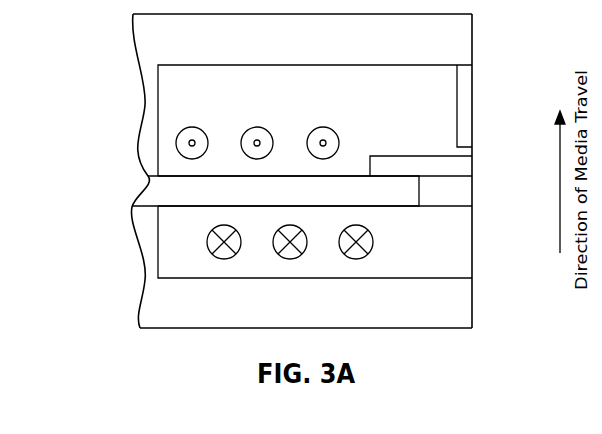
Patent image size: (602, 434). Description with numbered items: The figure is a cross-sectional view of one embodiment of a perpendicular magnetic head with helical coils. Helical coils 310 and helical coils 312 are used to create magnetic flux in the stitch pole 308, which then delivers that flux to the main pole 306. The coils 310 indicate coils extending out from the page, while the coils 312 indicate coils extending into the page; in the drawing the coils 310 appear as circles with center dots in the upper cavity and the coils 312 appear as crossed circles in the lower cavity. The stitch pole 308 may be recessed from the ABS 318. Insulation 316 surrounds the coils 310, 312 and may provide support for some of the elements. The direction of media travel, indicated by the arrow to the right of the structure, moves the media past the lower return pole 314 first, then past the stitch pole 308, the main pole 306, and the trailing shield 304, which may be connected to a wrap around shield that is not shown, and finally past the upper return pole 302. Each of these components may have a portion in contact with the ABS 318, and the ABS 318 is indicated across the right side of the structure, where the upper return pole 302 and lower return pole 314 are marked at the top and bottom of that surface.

The upper return pole 302 is at (384, 50).
The trailing shield 304 is at (472, 108).
The main pole 306 is at (472, 160).
The stitch pole 308 is at (332, 201).
The helical coils 310 is at (184, 130).
The helical coils 312 is at (207, 244).
The lower return pole 314 is at (332, 313).
The insulation 316 is at (420, 118).
The ABS 318 is at (473, 33).